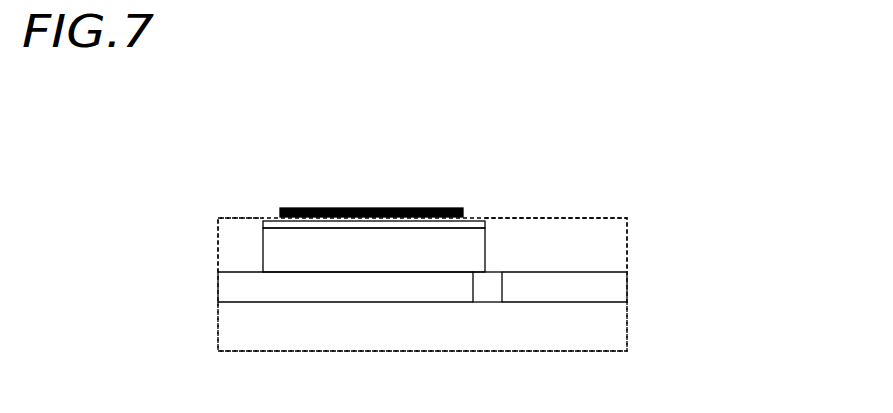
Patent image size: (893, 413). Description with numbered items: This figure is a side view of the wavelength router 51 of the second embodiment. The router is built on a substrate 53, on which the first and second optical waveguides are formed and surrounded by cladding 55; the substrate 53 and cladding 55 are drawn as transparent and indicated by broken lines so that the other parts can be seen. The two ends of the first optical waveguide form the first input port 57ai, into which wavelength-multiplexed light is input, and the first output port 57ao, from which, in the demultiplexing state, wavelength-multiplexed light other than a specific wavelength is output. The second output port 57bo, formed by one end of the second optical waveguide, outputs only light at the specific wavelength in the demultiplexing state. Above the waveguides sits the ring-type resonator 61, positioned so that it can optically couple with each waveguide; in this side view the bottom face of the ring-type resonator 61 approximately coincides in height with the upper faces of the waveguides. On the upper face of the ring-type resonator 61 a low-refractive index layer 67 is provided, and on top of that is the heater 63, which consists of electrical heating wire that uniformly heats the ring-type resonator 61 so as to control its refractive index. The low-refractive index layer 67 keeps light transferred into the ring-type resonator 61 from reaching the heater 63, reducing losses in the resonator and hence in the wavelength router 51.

The wavelength router 51 is at (657, 177).
The substrate 53 is at (610, 328).
The cladding 55 is at (608, 235).
The first input port 57ai is at (214, 284).
The first output port 57ao is at (633, 287).
The second output port 57bo is at (486, 294).
The ring-type resonator 61 is at (268, 250).
The heater 63 is at (342, 208).
The low-refractive index layer 67 is at (268, 225).